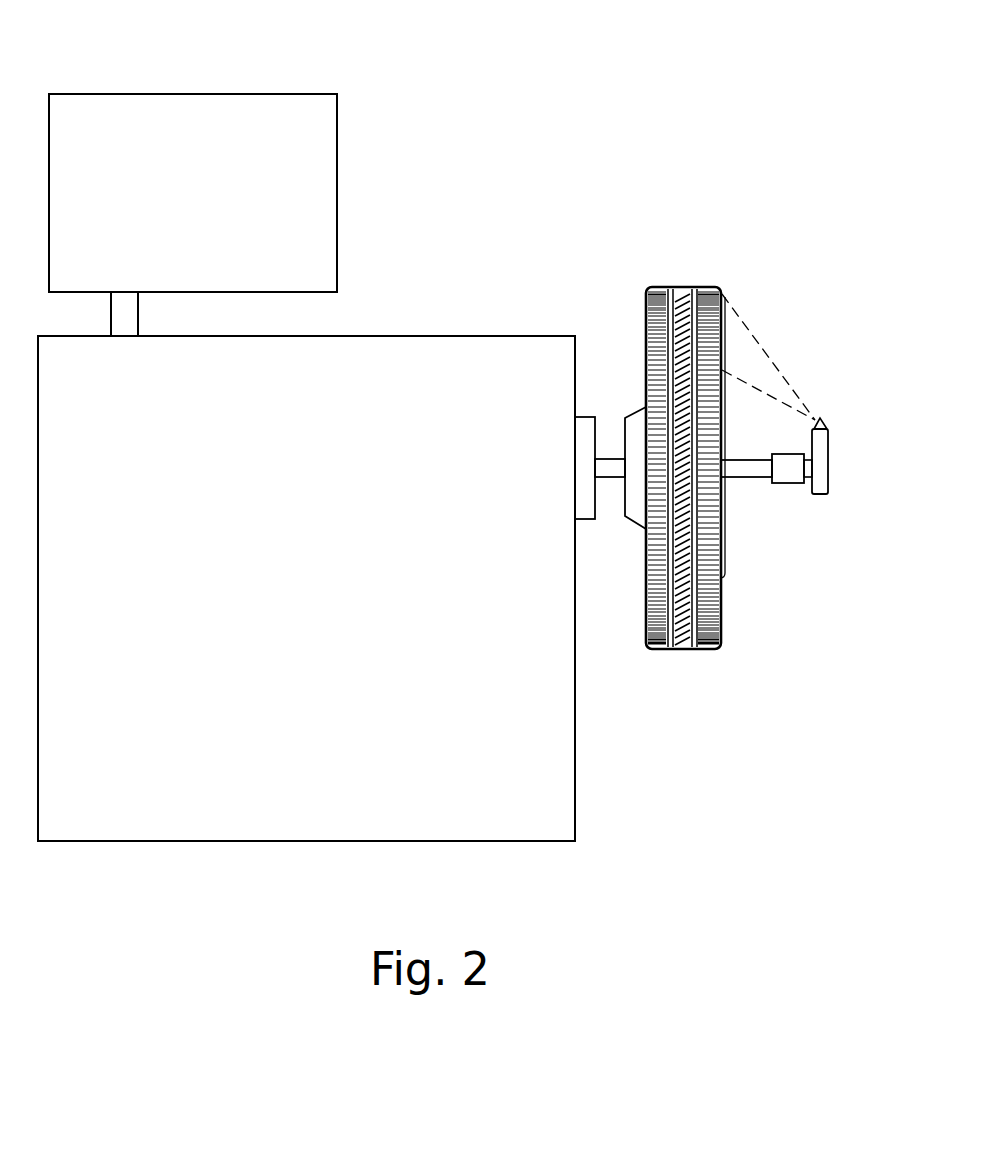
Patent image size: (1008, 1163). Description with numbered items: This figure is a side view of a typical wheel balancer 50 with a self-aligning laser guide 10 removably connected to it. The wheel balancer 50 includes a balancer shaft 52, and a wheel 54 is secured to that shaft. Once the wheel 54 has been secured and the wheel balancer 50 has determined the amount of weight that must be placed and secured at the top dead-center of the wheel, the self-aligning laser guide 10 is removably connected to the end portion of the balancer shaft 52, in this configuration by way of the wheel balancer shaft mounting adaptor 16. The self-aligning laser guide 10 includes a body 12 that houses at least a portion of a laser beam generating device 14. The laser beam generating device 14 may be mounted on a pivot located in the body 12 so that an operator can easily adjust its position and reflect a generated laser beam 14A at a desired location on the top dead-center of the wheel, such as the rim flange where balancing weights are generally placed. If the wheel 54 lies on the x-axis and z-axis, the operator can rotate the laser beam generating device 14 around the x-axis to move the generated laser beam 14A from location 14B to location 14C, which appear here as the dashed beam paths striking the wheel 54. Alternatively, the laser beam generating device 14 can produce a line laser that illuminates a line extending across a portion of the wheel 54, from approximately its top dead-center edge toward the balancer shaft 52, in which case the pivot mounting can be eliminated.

The self-aligning laser guide 10 is at (813, 511).
The body 12 is at (830, 480).
The laser beam generating device 14 is at (826, 426).
The generated laser beam 14A is at (776, 398).
The location 14B is at (722, 293).
The location 14C is at (722, 369).
The wheel balancer shaft mounting adaptor 16 is at (797, 485).
The wheel balancer 50 is at (490, 76).
The balancer shaft 52 is at (613, 458).
The wheel 54 is at (687, 651).